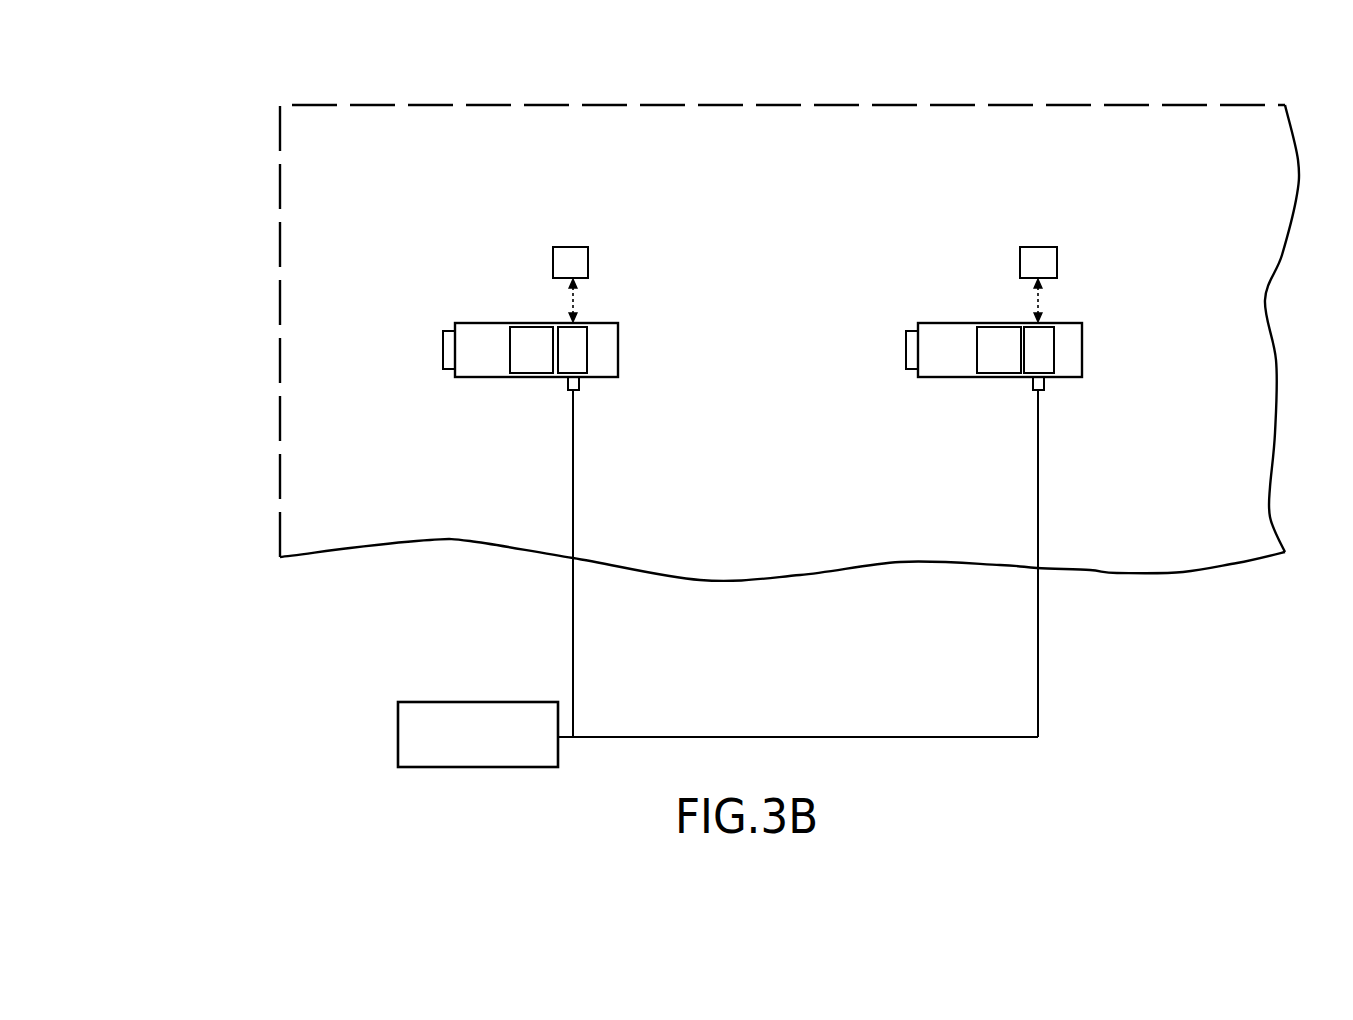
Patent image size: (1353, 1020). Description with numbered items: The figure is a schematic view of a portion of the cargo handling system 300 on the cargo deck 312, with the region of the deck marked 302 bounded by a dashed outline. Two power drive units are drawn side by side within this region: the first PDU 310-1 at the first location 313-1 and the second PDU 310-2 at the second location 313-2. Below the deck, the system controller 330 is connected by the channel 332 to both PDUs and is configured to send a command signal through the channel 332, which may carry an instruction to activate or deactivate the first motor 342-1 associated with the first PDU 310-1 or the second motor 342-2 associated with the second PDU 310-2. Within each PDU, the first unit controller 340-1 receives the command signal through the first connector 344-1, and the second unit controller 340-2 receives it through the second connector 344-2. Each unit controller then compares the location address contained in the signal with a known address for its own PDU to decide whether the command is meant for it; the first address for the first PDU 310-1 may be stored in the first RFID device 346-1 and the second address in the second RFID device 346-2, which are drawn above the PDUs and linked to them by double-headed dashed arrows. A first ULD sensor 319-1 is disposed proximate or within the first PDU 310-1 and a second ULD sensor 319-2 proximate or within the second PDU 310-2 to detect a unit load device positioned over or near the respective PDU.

The cargo handling system 300 is at (186, 138).
The substrate / region 302 is at (736, 309).
The cargo deck 312 is at (1233, 135).
The first location 313-1 is at (662, 404).
The second location 313-2 is at (1104, 406).
The first PDU 310-1 is at (480, 323).
The second PDU 310-2 is at (943, 323).
The first ULD sensor 319-1 is at (443, 348).
The second ULD sensor 319-2 is at (906, 348).
The first motor 342-1 is at (510, 357).
The second motor 342-2 is at (977, 359).
The first unit controller 340-1 is at (587, 356).
The second unit controller 340-2 is at (1056, 348).
The first connector 344-1 is at (568, 385).
The second connector 344-2 is at (1033, 387).
The first RFID device 346-1 is at (570, 247).
The second RFID device 346-2 is at (1040, 247).
The system controller 330 is at (398, 728).
The channel 332 is at (1038, 674).